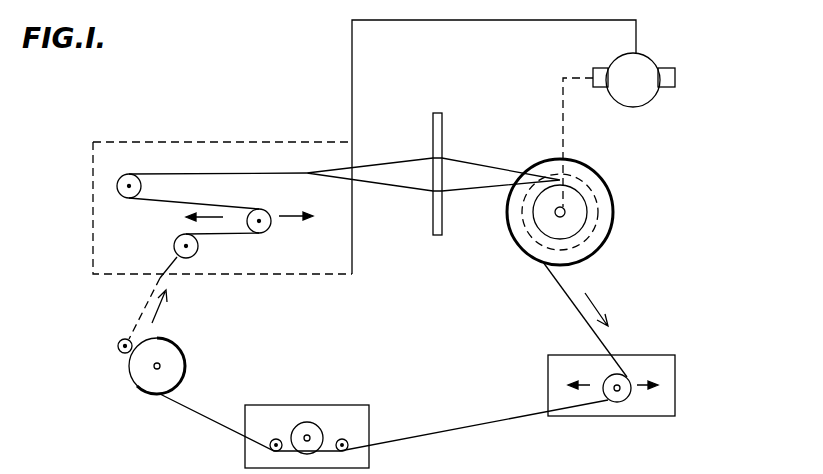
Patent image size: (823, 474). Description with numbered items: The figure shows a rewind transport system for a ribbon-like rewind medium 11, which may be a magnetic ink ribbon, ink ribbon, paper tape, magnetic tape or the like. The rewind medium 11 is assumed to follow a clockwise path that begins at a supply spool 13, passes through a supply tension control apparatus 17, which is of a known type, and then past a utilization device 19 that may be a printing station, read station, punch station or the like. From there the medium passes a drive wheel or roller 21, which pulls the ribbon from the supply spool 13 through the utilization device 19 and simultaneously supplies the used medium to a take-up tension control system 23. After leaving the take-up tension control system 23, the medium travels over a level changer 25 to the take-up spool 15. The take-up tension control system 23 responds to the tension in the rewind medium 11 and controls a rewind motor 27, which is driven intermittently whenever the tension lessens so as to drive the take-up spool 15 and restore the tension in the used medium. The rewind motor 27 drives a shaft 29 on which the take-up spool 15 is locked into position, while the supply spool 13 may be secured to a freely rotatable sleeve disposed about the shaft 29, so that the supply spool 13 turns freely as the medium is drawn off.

The rewind medium 11 is at (560, 303).
The supply spool 13 is at (548, 157).
The take-up spool 15 is at (586, 228).
The supply tension control apparatus 17 is at (675, 395).
The utilization device 19 is at (357, 405).
The drive wheel or roller 21 is at (185, 355).
The take-up tension control system 23 is at (180, 141).
The level changer 25 is at (433, 128).
The rewind motor 27 is at (652, 102).
The shaft 29 is at (566, 210).